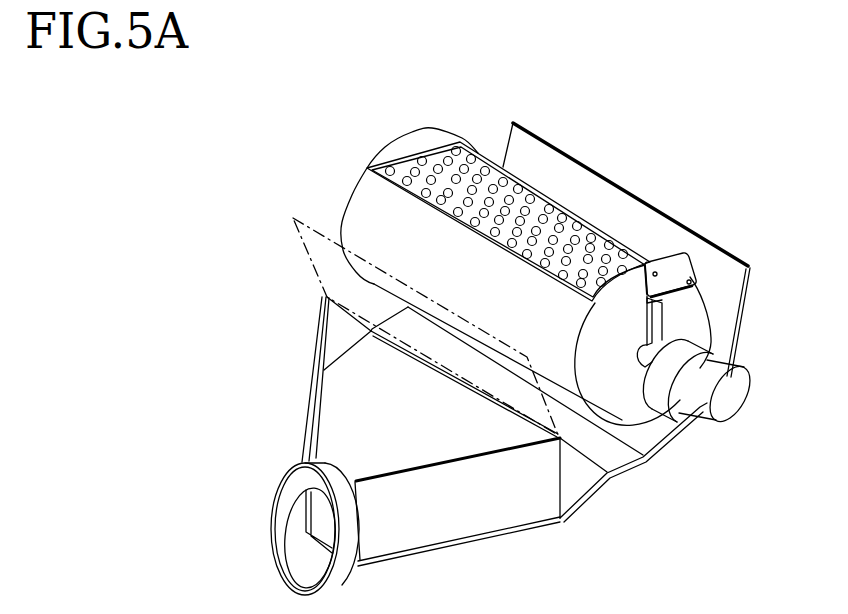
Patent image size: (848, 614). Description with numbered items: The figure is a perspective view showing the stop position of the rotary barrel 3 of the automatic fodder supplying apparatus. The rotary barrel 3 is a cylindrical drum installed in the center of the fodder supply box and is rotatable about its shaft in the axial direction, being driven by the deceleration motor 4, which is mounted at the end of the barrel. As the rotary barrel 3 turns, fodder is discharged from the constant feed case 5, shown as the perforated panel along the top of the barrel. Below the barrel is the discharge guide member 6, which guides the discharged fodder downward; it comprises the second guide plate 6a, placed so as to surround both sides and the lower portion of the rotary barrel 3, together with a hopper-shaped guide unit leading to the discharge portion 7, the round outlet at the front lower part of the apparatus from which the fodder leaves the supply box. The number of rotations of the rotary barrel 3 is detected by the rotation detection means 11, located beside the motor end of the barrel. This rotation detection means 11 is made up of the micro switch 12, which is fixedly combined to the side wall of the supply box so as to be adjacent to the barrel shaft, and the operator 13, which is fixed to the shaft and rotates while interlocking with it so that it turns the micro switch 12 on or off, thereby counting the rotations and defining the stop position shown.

The rotary barrel 3 is at (346, 214).
The deceleration motor 4 is at (735, 400).
The constant feed case 5 is at (480, 163).
The discharge guide member 6 is at (291, 400).
The second guide plate 6a is at (320, 270).
The discharge portion 7 is at (270, 541).
The rotation detection means 11 is at (676, 250).
The micro switch 12 is at (687, 267).
The operator 13 is at (658, 325).